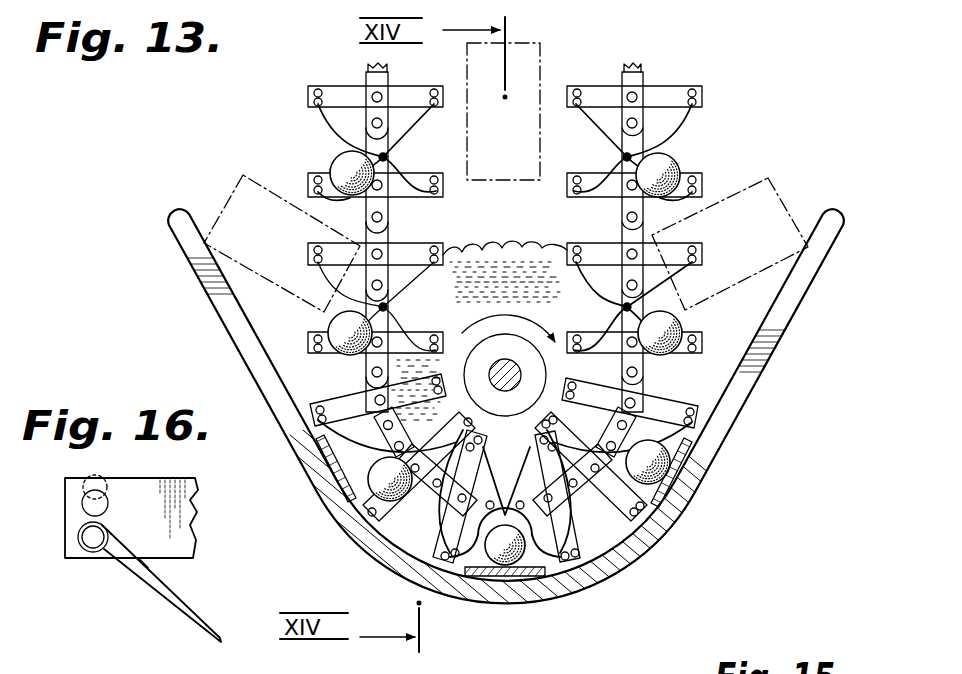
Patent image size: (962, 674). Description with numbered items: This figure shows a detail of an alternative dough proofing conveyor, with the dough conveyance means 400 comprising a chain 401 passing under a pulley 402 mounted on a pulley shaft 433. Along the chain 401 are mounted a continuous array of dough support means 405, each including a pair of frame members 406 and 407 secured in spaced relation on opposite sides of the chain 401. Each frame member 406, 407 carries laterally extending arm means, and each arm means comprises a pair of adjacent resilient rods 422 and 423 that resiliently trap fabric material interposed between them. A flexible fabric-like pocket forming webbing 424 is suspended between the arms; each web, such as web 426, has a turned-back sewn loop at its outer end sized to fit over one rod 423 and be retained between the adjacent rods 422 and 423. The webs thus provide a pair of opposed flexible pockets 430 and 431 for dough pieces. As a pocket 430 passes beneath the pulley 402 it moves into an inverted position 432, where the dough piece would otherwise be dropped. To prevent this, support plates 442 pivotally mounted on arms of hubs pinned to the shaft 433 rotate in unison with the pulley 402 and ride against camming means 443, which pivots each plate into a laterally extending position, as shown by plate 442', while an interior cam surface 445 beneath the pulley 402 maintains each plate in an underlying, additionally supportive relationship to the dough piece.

In FIG. 13, the dough conveyance means 400 is at (715, 128).
In FIG. 13, the chain 401 is at (635, 75).
In FIG. 13, the pulley 402 is at (517, 275).
In FIG. 13, the dough support means 405 is at (325, 82).
In FIG. 13, the frame member 406 is at (665, 90).
In FIG. 16, the frame member 406 is at (170, 545).
In FIG. 13, the frame member 407 is at (703, 185).
In FIG. 13, the resilient rod 422 is at (335, 470).
In FIG. 16, the resilient rod 422 is at (95, 478).
In FIG. 16, the resilient rod 423 is at (92, 545).
In FIG. 13, the pocket forming webbing 424 is at (325, 277).
In FIG. 16, the flexible fabric-like web 426 is at (205, 625).
In FIG. 13, the flexible pocket 430 is at (333, 143).
In FIG. 13, the flexible pocket 431 is at (398, 158).
In FIG. 13, the inverted position 432 is at (548, 583).
In FIG. 13, the pulley shaft 433 is at (503, 372).
In FIG. 13, the support plate 442 is at (480, 241).
In FIG. 13, the support plate 442' is at (507, 618).
In FIG. 13, the camming means 443 is at (705, 530).
In FIG. 13, the interior cam surface 445 is at (395, 533).